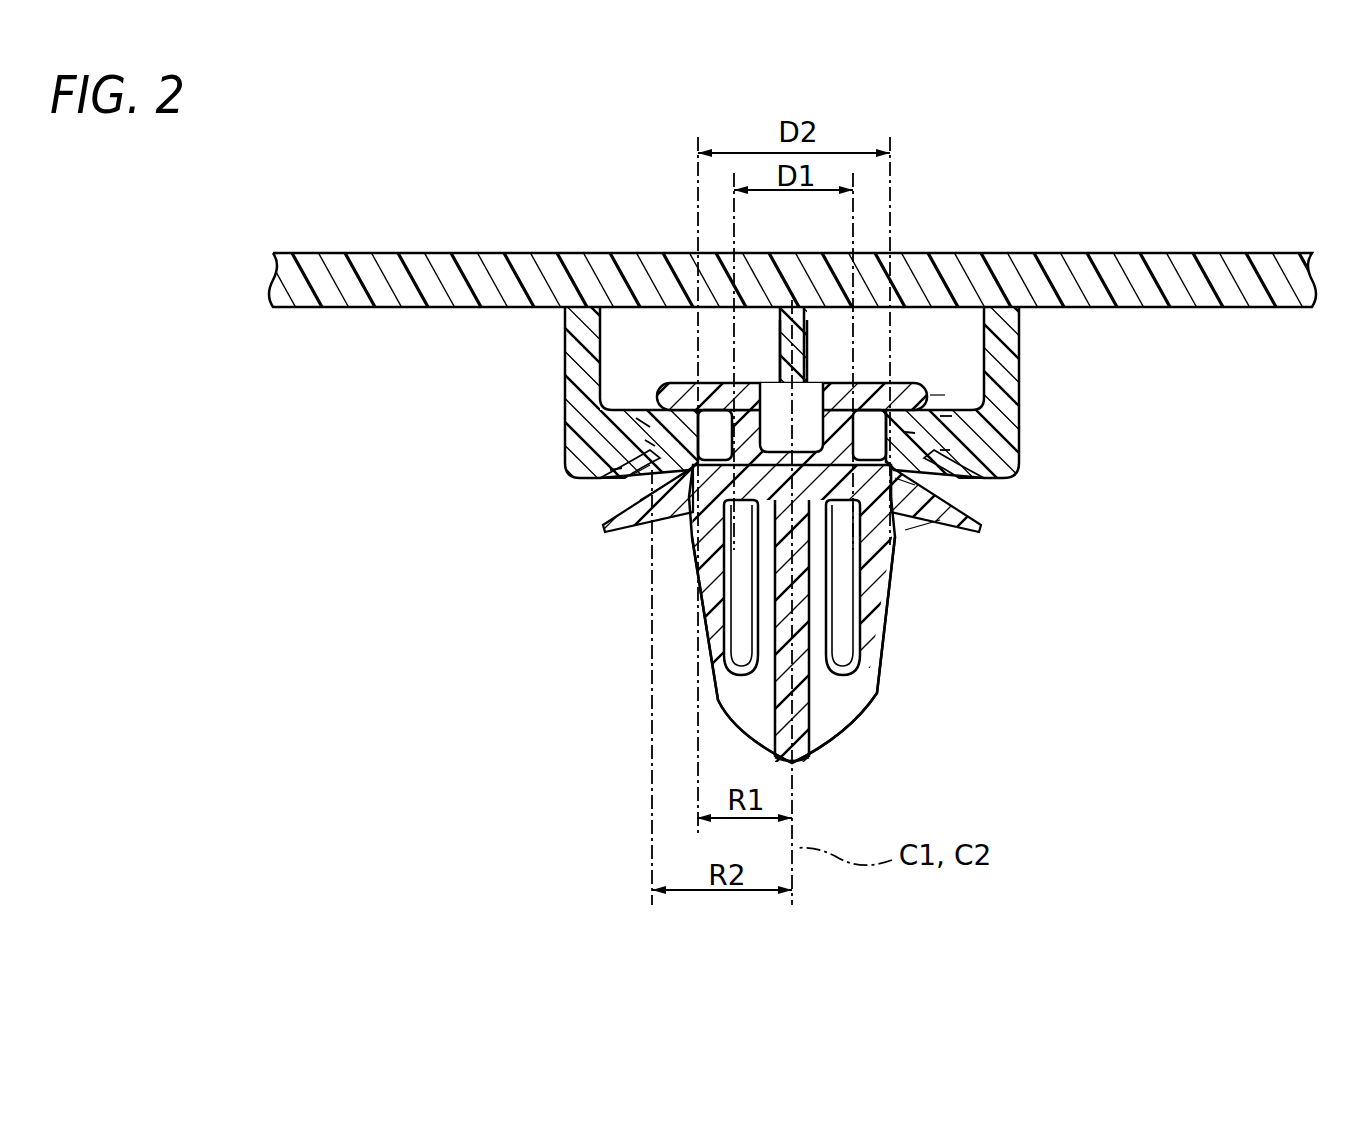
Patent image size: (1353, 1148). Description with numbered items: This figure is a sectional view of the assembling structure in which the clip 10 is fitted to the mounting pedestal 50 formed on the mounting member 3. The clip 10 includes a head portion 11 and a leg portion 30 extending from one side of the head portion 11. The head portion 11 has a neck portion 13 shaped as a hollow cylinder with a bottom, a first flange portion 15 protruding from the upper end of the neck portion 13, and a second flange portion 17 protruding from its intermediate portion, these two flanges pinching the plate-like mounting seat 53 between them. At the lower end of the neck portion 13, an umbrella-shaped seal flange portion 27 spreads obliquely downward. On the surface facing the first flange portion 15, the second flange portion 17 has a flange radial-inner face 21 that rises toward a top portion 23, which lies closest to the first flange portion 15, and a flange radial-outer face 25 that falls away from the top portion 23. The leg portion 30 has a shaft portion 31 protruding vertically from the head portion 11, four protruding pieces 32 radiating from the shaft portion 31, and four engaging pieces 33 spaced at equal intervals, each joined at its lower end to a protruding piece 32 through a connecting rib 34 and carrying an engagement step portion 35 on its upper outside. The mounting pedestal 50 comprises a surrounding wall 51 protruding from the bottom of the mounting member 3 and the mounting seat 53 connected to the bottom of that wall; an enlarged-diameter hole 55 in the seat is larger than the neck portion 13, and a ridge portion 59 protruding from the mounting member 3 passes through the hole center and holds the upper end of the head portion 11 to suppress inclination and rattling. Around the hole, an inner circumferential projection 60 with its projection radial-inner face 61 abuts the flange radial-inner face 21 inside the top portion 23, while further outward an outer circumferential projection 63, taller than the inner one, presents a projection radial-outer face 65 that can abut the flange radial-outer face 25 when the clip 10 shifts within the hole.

The mounting member 3 is at (1243, 297).
The clip 10 is at (775, 495).
The head portion 11 is at (945, 391).
The neck portion 13 is at (945, 450).
The first flange portion 15 is at (673, 386).
The second flange portion 17 is at (897, 479).
The flange radial-inner face 21 is at (692, 490).
The top portion 23 is at (665, 476).
The flange radial-outer face 25 is at (640, 470).
The seal flange portion 27 is at (930, 506).
The leg portion 30 is at (803, 642).
The shaft portion 31 is at (797, 760).
The protruding piece 32 is at (765, 662).
The engaging piece 33 is at (708, 645).
The connecting rib 34 is at (750, 722).
The engagement step portion 35 is at (905, 531).
The mounting pedestal 50 is at (770, 327).
The surrounding wall 51 is at (1008, 332).
The mounting seat 53 is at (910, 432).
The enlarged-diameter hole 55 is at (950, 416).
The ridge portion 59 is at (793, 347).
The inner circumferential projection 60 is at (650, 427).
The projection radial-inner face 61 is at (655, 446).
The outer circumferential projection 63 is at (622, 468).
The projection radial-outer face 65 is at (650, 454).